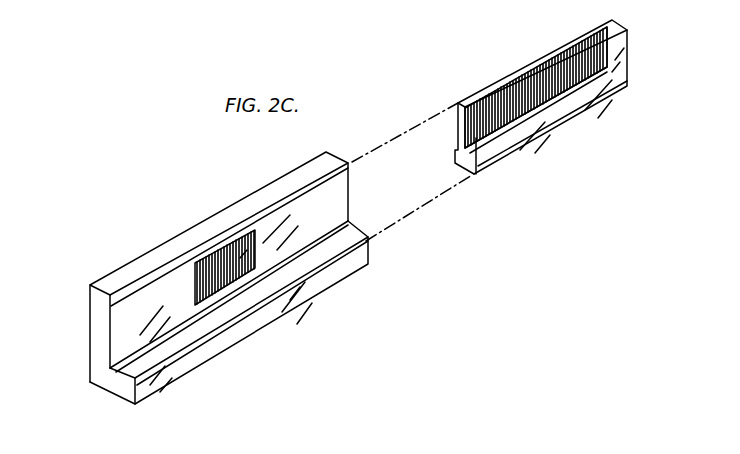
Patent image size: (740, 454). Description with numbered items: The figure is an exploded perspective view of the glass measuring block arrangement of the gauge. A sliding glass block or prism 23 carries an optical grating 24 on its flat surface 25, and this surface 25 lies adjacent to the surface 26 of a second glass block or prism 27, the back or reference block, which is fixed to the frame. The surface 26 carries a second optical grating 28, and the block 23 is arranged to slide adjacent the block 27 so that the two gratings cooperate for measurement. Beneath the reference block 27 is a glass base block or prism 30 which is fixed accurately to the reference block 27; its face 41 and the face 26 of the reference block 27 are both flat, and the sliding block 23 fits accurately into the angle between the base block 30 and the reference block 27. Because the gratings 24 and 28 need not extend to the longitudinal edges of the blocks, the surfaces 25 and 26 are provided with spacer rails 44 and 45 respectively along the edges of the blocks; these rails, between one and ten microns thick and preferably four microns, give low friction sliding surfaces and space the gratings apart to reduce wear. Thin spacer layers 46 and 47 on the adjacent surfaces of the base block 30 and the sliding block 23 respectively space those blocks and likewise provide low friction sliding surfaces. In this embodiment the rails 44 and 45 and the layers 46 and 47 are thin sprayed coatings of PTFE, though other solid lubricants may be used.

The glass block or prism 23 is at (628, 69).
The optical grating 24 is at (628, 38).
The surface 25 is at (456, 121).
The surface 26 is at (352, 192).
The second glass block or prism 27 is at (102, 305).
The second optical grating 28 is at (200, 262).
The glass base block or prism 30 is at (119, 384).
The face 41 is at (109, 378).
The spacer rail 44 is at (456, 157).
The spacer rail 45 is at (330, 238).
The thin spacer layer 46 is at (252, 296).
The thin spacer layer 47 is at (608, 99).